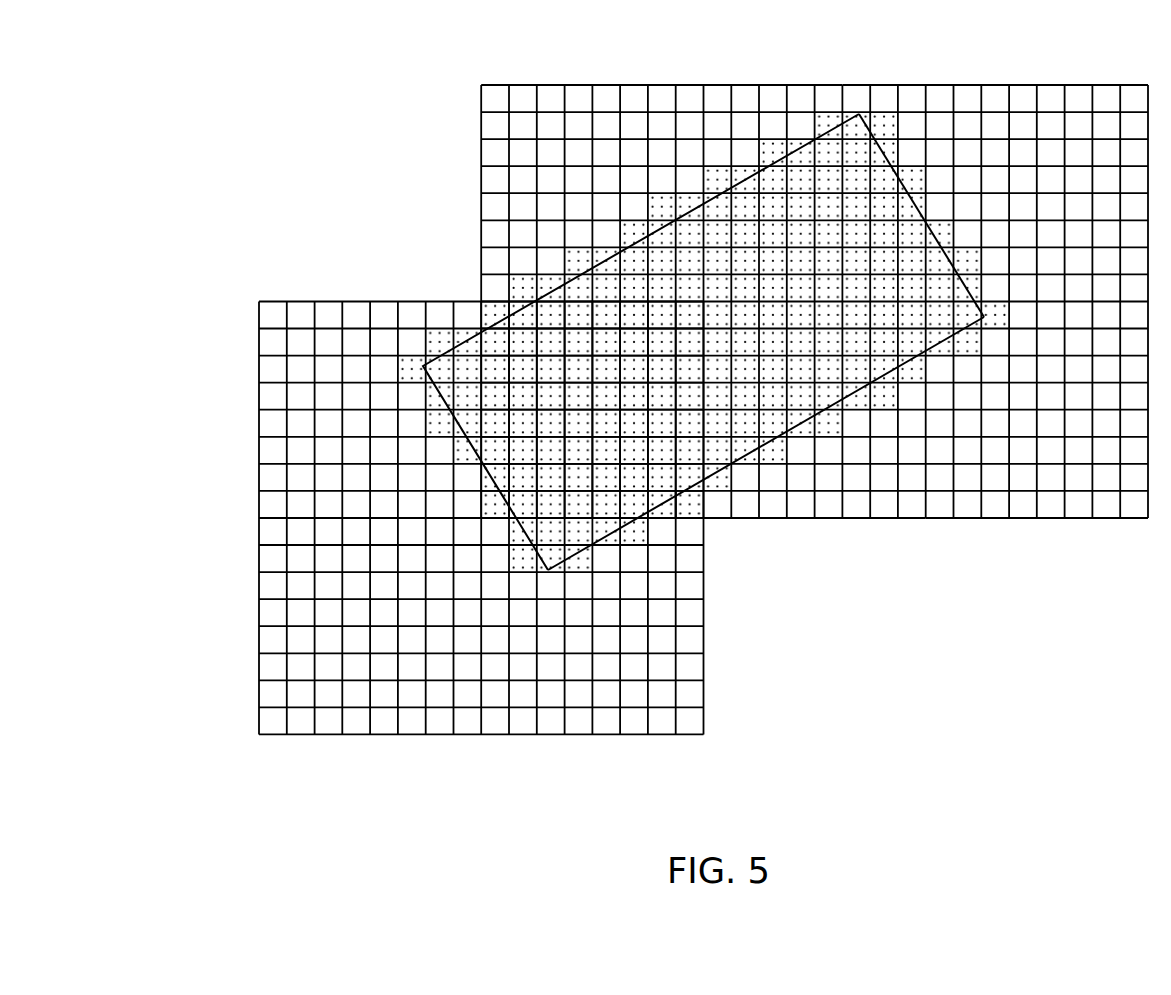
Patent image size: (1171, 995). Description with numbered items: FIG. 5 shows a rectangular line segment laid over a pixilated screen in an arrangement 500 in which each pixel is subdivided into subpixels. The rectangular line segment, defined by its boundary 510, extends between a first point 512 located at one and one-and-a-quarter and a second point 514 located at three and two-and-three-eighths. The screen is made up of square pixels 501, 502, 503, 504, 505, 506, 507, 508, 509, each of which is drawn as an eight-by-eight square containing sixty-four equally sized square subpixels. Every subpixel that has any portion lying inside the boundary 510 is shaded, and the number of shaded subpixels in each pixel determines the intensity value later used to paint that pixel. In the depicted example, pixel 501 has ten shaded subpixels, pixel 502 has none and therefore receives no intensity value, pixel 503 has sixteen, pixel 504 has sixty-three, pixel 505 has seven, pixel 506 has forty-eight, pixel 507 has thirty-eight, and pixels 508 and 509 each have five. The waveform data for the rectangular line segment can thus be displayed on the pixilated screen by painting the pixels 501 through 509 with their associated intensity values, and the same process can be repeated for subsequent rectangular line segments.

The image registration arrangement 500 is at (386, 64).
The pixel 501 is at (300, 312).
The pixel 502 is at (415, 725).
The pixel 503 is at (483, 205).
The pixel 504 is at (689, 510).
The pixel 505 is at (697, 646).
The pixel 506 is at (827, 90).
The pixel 507 is at (773, 508).
The pixel 508 is at (1024, 90).
The pixel 509 is at (1020, 512).
The boundary 510 is at (812, 433).
The first point 512 is at (480, 463).
The second point 514 is at (927, 218).